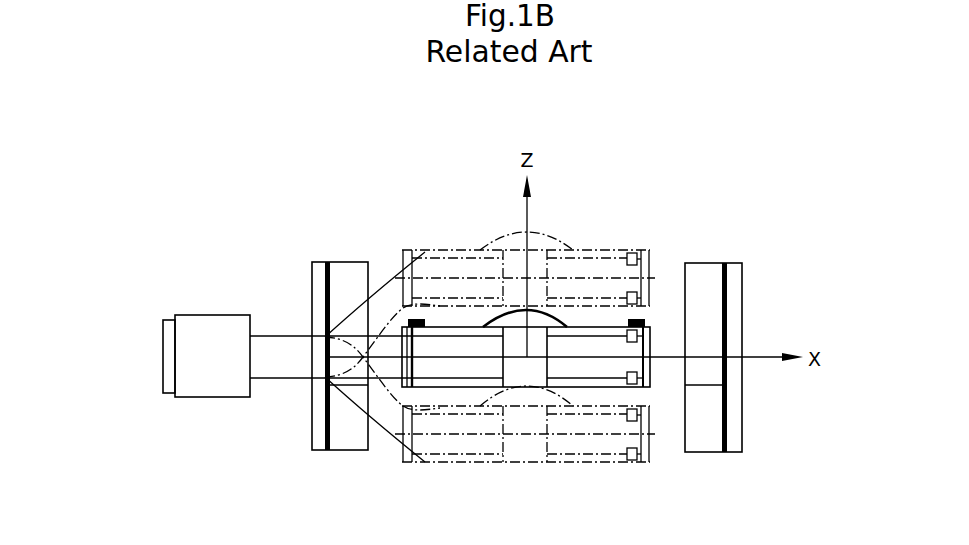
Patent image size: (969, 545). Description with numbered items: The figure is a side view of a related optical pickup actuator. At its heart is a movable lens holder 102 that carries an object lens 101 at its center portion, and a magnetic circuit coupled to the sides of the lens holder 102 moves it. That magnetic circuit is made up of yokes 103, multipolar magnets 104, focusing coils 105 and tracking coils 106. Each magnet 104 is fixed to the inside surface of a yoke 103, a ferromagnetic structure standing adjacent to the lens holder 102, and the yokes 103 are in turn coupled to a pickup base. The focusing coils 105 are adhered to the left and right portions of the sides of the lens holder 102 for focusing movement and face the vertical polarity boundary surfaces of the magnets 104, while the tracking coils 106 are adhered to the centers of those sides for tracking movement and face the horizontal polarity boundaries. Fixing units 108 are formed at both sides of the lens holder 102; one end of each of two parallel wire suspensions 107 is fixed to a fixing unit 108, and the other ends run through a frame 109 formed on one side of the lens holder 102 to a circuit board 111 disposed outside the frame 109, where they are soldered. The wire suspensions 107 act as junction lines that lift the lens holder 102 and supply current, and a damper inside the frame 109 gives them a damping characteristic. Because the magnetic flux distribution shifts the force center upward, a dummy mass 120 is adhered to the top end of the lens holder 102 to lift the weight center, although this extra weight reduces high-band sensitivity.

The object lens 101 is at (543, 322).
The lens holder 102 is at (448, 343).
The yoke 103 is at (318, 262).
The multipolar magnet 104 is at (345, 262).
The focusing coil 105 is at (650, 373).
The tracking coil 106 is at (650, 333).
The wire suspension 107 is at (275, 334).
The fixing unit 108 is at (528, 367).
The frame 109 is at (209, 315).
The circuit board 111 is at (163, 328).
The dummy mass 120 is at (410, 320).